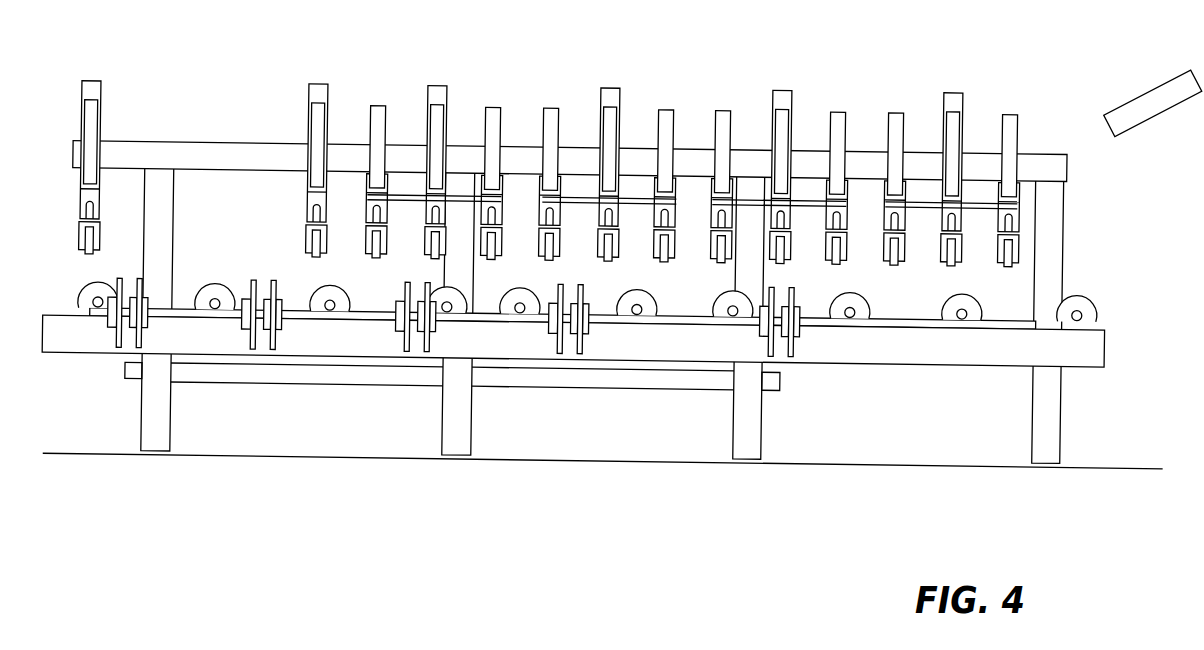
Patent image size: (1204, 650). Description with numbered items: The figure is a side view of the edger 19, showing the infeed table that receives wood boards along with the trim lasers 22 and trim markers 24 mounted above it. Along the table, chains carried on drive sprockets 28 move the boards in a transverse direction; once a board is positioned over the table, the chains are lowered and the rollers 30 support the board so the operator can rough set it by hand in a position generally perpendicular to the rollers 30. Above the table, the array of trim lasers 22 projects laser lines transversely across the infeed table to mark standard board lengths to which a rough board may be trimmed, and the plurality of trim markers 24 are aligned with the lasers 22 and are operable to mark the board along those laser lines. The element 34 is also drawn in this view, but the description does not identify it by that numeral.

The edger 19 is at (82, 407).
The trim lasers 22 is at (90, 100).
The trim markers 24 is at (80, 203).
The drive sprockets 28 is at (142, 277).
The rollers 30 is at (85, 286).
The blade 34 is at (1150, 76).